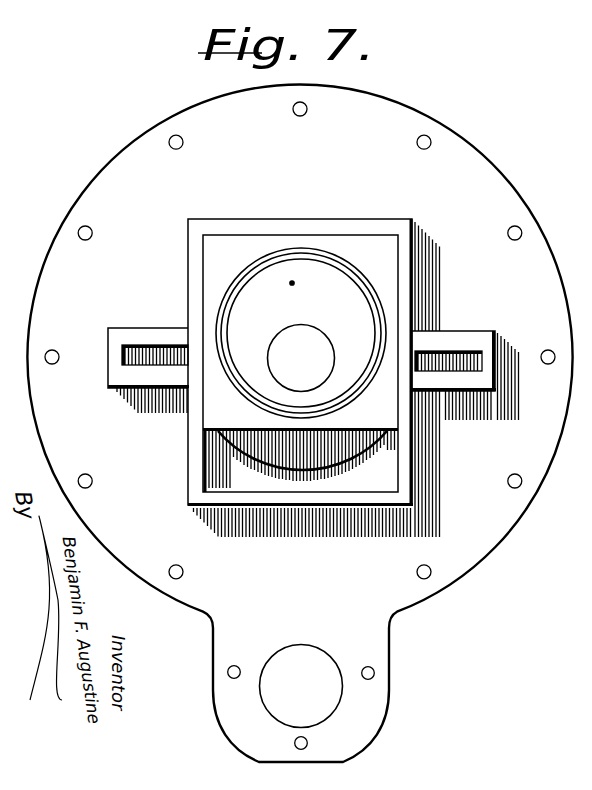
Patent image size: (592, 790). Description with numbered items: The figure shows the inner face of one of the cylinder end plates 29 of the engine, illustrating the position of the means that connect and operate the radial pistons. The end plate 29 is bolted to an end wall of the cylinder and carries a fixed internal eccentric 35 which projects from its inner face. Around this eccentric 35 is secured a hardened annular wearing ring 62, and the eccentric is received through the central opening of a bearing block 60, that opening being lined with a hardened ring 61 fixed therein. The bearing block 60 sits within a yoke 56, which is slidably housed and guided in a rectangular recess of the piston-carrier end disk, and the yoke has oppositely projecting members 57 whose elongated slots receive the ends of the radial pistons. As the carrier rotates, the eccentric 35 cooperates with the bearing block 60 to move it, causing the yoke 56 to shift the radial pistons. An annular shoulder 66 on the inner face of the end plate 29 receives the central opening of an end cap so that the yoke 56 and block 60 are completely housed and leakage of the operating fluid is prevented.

The end plate 29 is at (299, 423).
The yoke 56 is at (233, 227).
The oppositely projecting members 57 is at (137, 332).
The bearing block 60 is at (300, 363).
The hardened ring 61 is at (360, 278).
The hardened annular wearing ring 62 is at (366, 268).
The internal eccentric 35 is at (316, 351).
The annular shoulder 66 is at (350, 462).